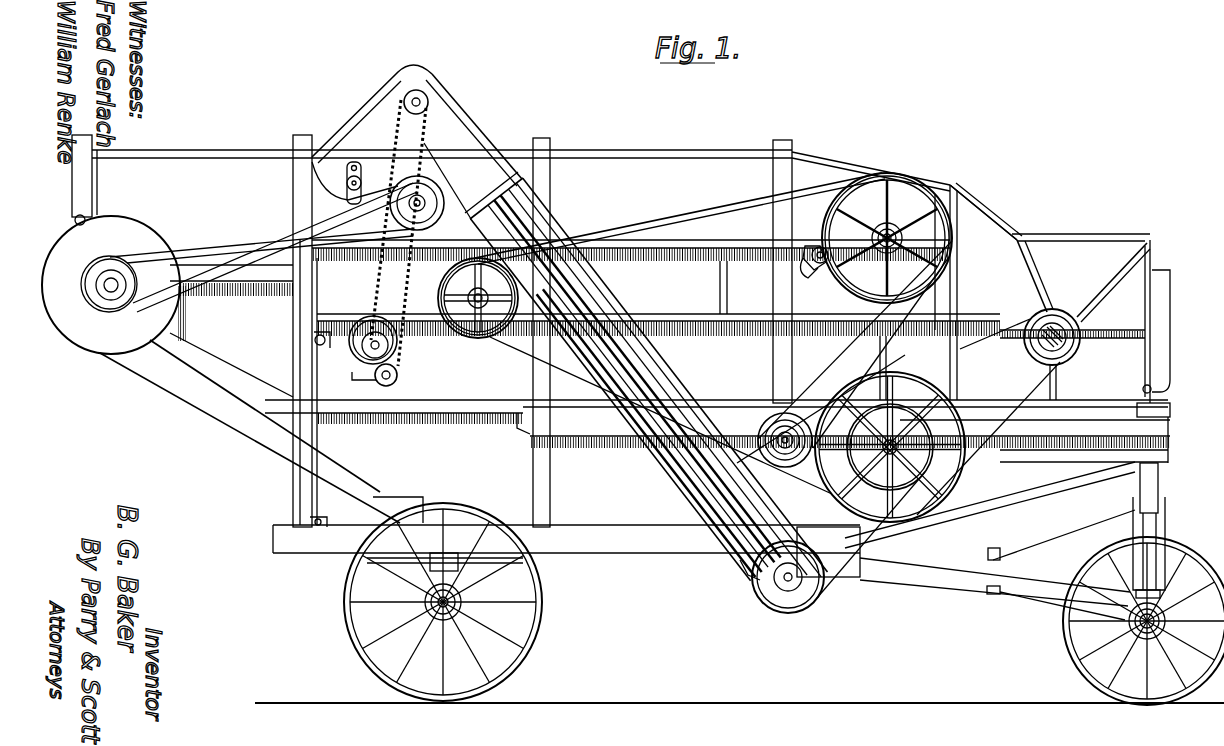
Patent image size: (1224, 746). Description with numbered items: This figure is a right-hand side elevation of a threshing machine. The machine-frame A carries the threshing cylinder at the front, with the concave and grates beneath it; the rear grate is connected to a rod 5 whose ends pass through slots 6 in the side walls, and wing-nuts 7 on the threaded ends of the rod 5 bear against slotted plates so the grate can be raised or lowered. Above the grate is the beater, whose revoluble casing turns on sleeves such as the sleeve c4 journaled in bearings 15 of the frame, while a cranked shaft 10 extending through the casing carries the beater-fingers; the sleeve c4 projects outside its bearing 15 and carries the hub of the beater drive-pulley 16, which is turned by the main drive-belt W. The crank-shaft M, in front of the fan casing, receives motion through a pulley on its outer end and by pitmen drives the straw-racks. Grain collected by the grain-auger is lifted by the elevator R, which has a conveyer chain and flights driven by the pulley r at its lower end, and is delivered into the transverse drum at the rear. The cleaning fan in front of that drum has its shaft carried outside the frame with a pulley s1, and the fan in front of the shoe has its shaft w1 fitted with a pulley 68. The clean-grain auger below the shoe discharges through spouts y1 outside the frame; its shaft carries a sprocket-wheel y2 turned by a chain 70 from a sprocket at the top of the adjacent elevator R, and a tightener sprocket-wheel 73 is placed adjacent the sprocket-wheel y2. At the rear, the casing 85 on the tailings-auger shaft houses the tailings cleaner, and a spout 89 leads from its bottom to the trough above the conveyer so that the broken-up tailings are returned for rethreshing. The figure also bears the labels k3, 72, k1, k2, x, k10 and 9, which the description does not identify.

The casing 85 is at (82, 335).
The spout 89 is at (352, 474).
The chute k3 is at (355, 132).
The elevator R is at (473, 146).
The upper sprocket 72 is at (426, 102).
The chain 70 is at (405, 270).
The sprocket-wheel y2 is at (366, 327).
The tightener sprocket-wheel 73 is at (398, 376).
The spout y1 is at (352, 378).
The pulley s1 is at (432, 210).
The idler pulley k1 is at (362, 190).
The pulley k2 is at (773, 428).
The shaft w1 is at (478, 338).
The pulley 68 is at (489, 336).
The main drive-belt W is at (716, 207).
The machine-frame A is at (634, 186).
The beater drive-pulley 16 is at (906, 186).
The sleeve c4 is at (887, 238).
The rod 5 is at (829, 256).
The wing-nut 7 is at (812, 246).
The slot 6 is at (816, 274).
The bearing 15 is at (965, 198).
The cranked shaft 10 is at (952, 238).
The pulley x is at (1012, 320).
The belt k10 is at (958, 395).
The crank-shaft M is at (948, 432).
The pulley r is at (826, 592).
The pulley bracket 9 is at (788, 580).